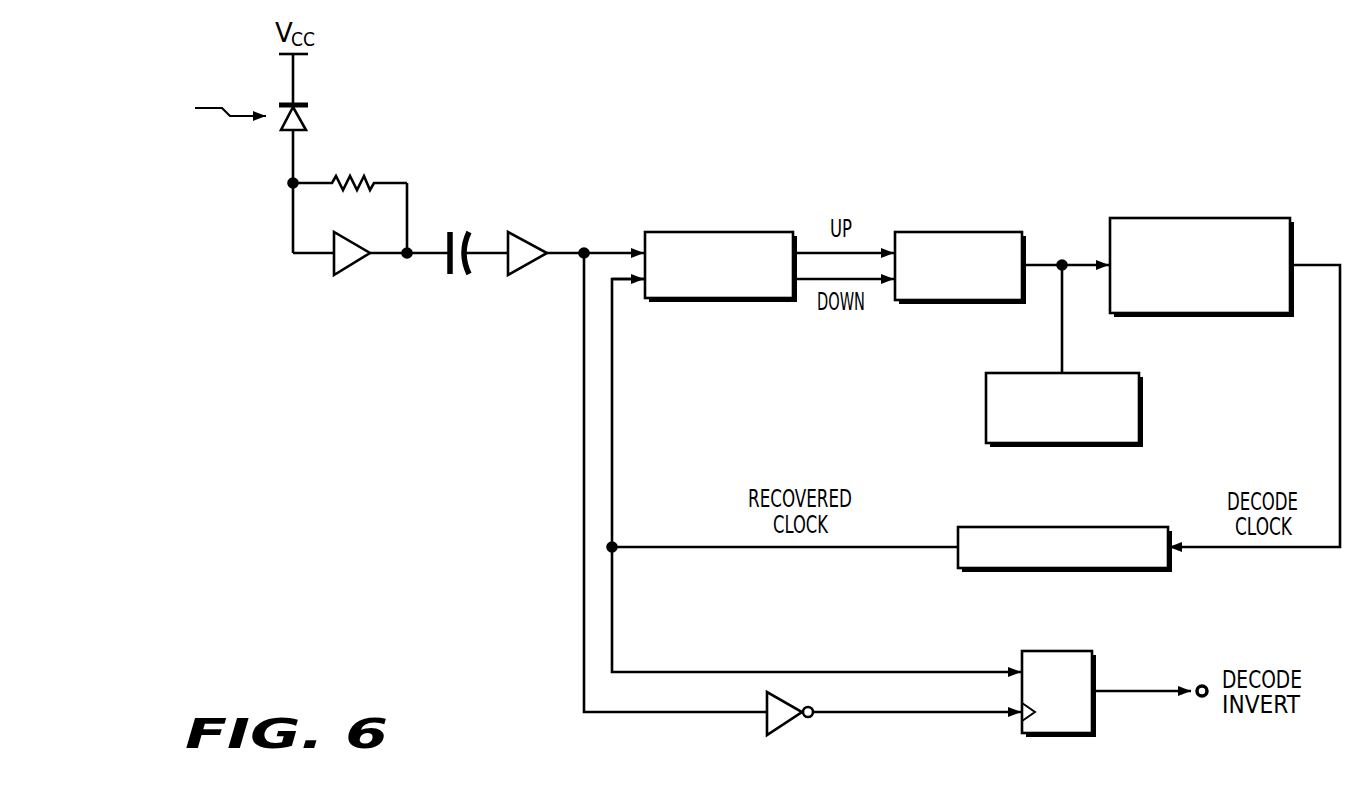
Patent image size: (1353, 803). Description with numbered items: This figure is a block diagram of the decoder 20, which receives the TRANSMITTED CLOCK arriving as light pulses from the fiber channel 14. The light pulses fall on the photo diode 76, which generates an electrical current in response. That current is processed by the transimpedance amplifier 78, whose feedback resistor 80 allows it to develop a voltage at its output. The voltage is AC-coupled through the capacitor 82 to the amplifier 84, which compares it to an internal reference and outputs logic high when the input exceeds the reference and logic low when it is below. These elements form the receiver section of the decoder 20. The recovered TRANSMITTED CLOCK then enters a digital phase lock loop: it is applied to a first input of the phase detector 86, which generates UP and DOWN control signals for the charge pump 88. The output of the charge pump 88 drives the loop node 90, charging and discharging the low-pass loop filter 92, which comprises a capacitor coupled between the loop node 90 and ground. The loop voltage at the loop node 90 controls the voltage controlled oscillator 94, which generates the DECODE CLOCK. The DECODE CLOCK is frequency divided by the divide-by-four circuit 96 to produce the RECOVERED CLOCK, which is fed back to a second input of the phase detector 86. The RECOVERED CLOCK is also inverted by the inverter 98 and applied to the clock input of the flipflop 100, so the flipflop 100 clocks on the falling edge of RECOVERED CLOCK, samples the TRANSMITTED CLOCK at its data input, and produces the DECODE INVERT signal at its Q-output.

The fiber channel 14 is at (154, 123).
The decoder 20 is at (328, 665).
The photo diode 76 is at (312, 113).
The transimpedance amplifier 78 is at (350, 262).
The feedback resistor 80 is at (354, 166).
The capacitor 82 is at (458, 228).
The amplifier 84 is at (530, 267).
The phase detector 86 is at (701, 231).
The charge pump 88 is at (949, 230).
The loop node 90 is at (1062, 262).
The low-pass loop filter 92 is at (1143, 405).
The voltage controlled oscillator 94 is at (1178, 215).
The divide-by-4 circuit 96 is at (1012, 572).
The inverter 98 is at (789, 720).
The flipflop 100 is at (1065, 737).